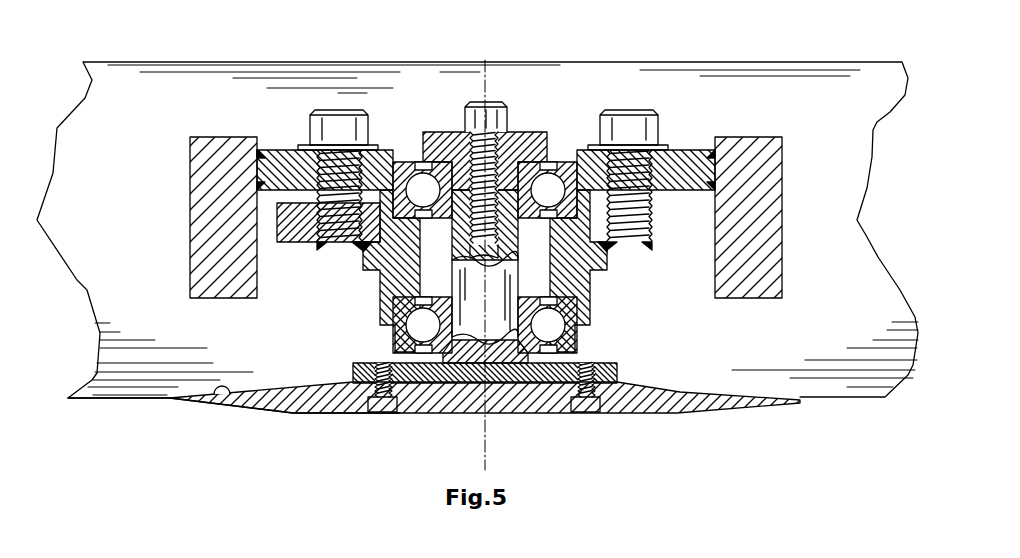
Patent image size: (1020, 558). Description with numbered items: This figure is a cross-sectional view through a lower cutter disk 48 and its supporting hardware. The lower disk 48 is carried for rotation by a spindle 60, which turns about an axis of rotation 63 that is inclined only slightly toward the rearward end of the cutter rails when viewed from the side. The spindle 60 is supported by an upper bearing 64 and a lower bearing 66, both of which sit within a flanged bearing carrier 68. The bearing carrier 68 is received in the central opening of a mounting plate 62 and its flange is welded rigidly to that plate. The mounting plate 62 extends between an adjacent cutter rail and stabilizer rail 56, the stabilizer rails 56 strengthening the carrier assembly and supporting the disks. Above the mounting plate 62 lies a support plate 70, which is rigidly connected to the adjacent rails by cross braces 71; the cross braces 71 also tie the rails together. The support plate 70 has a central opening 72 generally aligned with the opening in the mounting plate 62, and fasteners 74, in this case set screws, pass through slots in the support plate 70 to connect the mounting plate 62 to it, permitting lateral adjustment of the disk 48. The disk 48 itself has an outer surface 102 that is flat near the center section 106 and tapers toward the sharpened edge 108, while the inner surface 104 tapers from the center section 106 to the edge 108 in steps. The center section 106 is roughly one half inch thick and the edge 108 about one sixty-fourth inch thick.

The lower disk 48 is at (668, 403).
The stabilizer rail 56 is at (135, 103).
The spindle 60 is at (470, 365).
The mounting plate 62 is at (295, 226).
The axis of rotation 63 is at (488, 437).
The upper bearing 64 is at (560, 170).
The lower bearing 66 is at (577, 340).
The flanged bearing carrier 68 is at (583, 285).
The support plate 70 is at (688, 160).
The cross brace 71 is at (218, 224).
The central opening 72 is at (405, 157).
The fastener 74 is at (331, 126).
The outer surface 102 is at (253, 412).
The inner surface 104 is at (217, 396).
The center section 106 is at (565, 392).
The sharpened edge 108 is at (173, 400).